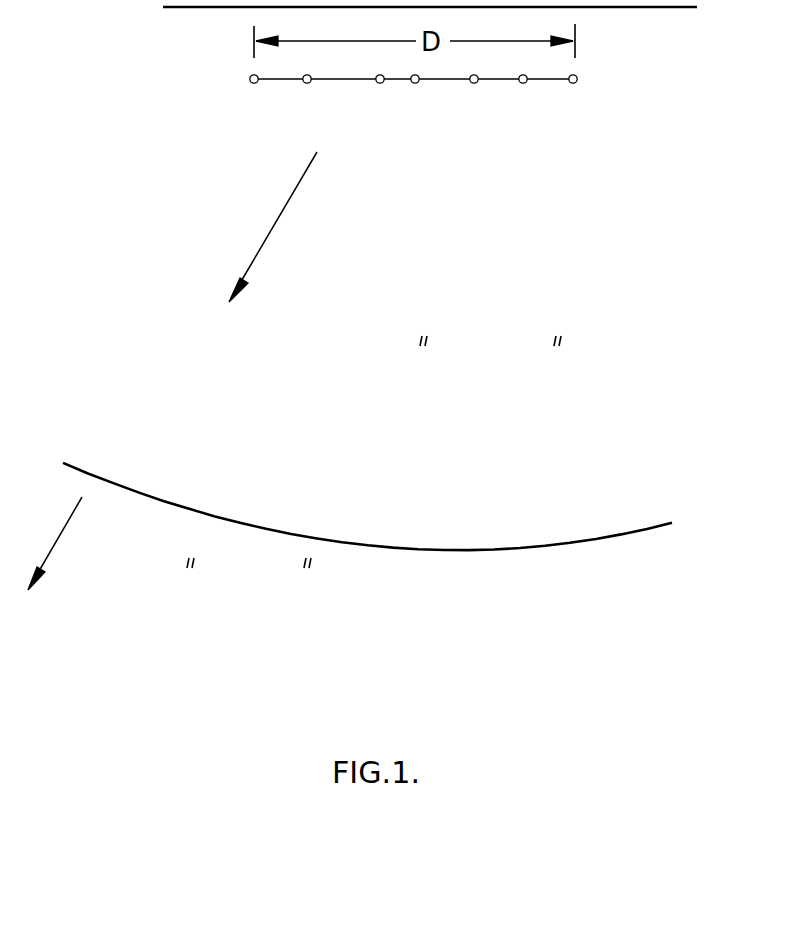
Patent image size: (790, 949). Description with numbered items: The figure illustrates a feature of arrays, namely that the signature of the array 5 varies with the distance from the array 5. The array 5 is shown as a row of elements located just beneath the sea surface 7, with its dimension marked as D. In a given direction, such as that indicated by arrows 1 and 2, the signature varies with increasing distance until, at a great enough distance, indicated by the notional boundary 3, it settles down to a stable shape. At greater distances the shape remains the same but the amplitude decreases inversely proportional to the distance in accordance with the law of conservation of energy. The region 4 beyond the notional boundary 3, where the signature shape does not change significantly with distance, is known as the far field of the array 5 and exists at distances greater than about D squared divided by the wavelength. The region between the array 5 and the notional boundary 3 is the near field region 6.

The arrow 1 is at (272, 225).
The arrow 2 is at (60, 537).
The notional boundary 3 is at (315, 538).
The far field region 4 is at (389, 644).
The array 5 is at (579, 68).
The near field region 6 is at (508, 417).
The sea surface 7 is at (678, 8).